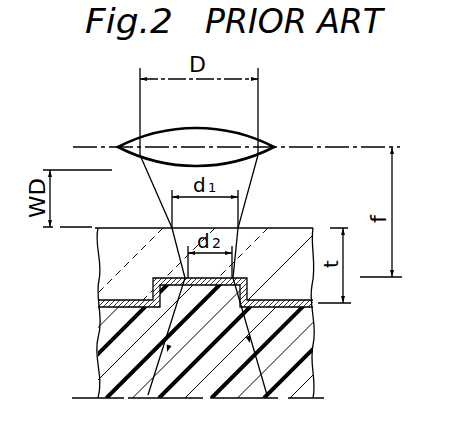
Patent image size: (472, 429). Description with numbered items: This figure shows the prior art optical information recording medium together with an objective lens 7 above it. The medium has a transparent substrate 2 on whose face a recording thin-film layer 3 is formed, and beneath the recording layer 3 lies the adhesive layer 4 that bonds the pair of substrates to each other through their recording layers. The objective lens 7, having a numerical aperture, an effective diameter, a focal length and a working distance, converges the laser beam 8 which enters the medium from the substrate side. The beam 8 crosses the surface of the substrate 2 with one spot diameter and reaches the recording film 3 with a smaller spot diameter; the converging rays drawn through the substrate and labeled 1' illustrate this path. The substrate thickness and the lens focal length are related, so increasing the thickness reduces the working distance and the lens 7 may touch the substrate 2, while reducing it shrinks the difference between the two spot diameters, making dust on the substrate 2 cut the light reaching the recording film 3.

The light beam 1' is at (254, 244).
The substrate 2 is at (112, 265).
The recording thin-film layer 3 is at (108, 306).
The adhesive layer 4 is at (316, 357).
The objective lens 7 is at (268, 140).
The laser beam 8 is at (140, 107).